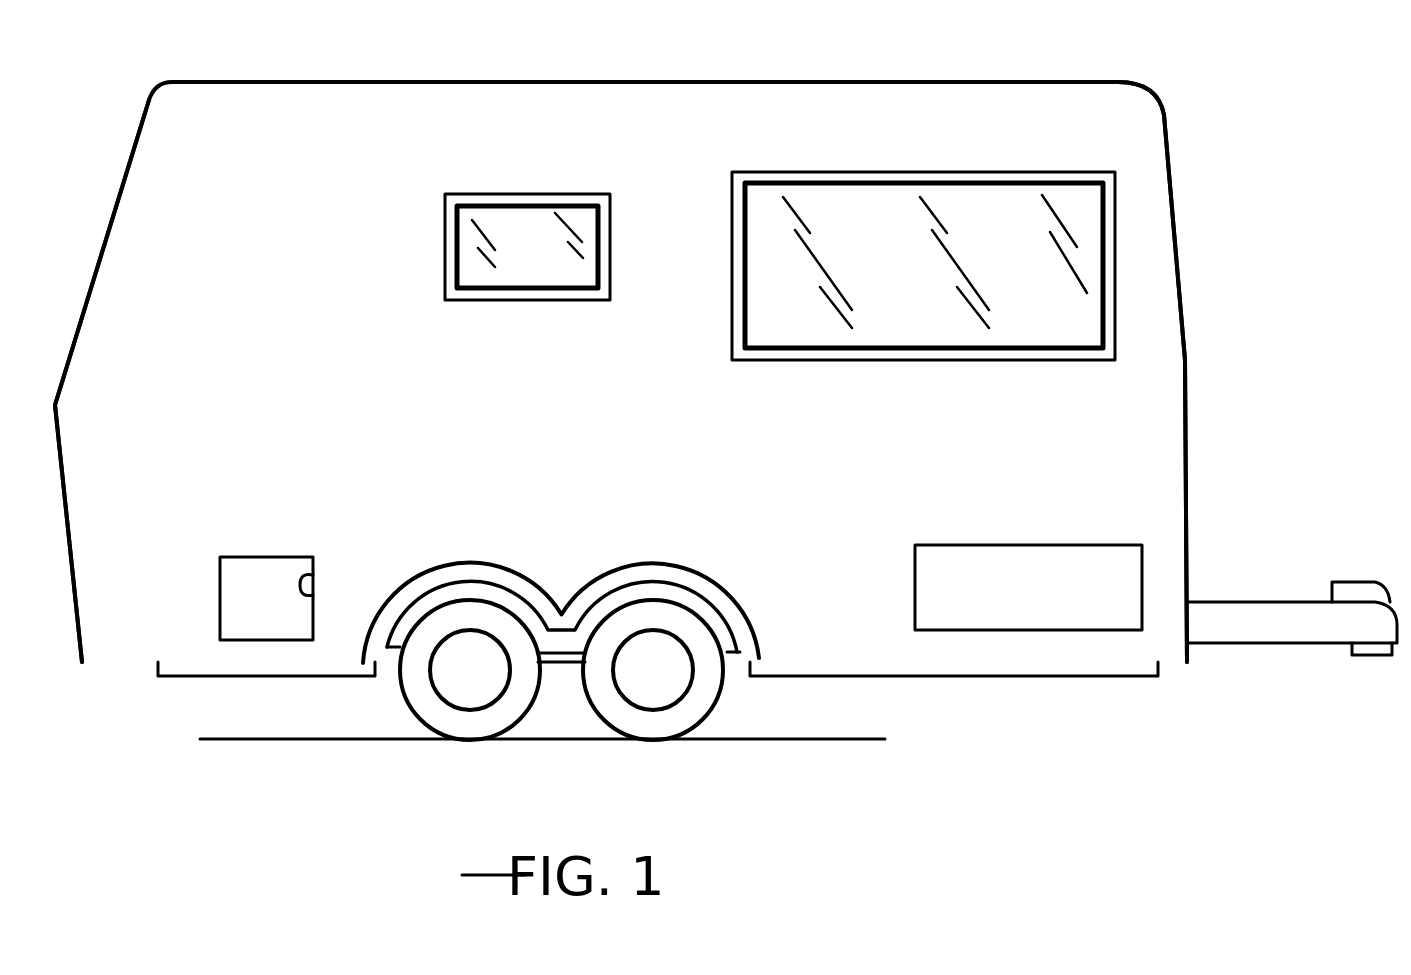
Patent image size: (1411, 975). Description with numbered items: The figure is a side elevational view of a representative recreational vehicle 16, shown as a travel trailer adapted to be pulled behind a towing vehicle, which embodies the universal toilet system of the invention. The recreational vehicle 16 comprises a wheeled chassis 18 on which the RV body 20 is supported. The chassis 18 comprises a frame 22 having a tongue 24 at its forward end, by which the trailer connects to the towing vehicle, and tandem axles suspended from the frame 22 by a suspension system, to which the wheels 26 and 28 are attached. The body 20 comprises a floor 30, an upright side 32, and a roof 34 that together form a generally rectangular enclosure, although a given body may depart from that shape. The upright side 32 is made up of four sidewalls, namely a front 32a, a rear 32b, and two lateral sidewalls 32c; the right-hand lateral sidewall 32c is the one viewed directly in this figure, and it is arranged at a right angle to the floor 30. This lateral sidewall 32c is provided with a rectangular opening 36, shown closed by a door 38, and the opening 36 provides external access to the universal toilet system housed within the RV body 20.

The recreational vehicle 16 is at (565, 82).
The wheeled chassis 18 is at (237, 680).
The RV body 20 is at (358, 118).
The frame 22 is at (905, 680).
The tongue 24 is at (1278, 600).
The wheel 26 is at (713, 713).
The wheel 28 is at (405, 697).
The floor 30 is at (838, 658).
The upright side 32 is at (1178, 212).
The front sidewall 32a is at (1185, 338).
The rear sidewall 32b is at (108, 220).
The lateral sidewall 32c is at (812, 107).
The roof 34 is at (985, 82).
The rectangular opening 36 is at (313, 595).
The door 38 is at (250, 578).